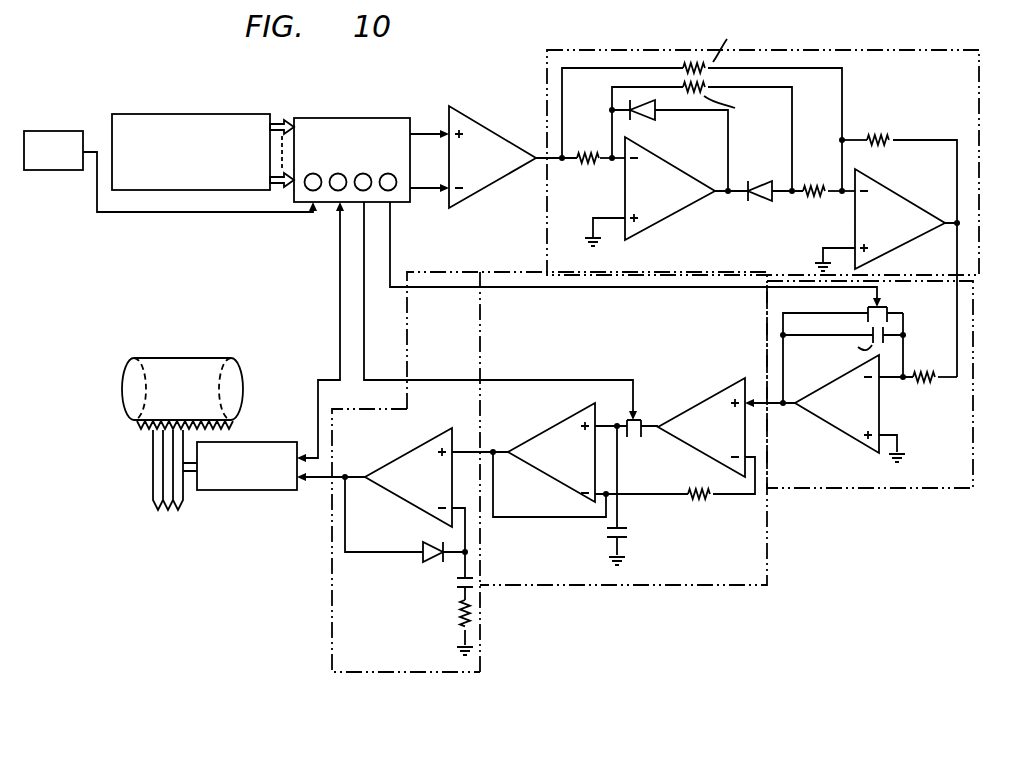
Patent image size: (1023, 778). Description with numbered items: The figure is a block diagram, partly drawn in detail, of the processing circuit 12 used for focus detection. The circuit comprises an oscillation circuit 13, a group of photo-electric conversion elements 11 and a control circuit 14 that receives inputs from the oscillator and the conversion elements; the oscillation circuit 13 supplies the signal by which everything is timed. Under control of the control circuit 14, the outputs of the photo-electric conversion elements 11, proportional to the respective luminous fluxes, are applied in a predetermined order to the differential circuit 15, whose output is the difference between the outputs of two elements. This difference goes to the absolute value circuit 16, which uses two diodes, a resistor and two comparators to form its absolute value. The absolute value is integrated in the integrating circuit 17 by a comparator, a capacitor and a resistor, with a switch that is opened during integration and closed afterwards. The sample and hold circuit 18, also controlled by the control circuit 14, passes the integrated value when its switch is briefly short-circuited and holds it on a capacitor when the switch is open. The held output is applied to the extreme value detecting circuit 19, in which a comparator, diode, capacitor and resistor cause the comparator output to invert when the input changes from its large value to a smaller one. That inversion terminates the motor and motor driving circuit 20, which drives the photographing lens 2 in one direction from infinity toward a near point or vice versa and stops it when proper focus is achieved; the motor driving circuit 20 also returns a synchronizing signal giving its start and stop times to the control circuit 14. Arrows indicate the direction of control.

The photographing lens 2 is at (157, 362).
The group of photo-electric conversion elements 11 is at (243, 126).
The processing circuit 12 is at (116, 81).
The oscillation circuit 13 is at (73, 131).
The control circuit 14 is at (386, 128).
The differential circuit 15 is at (481, 135).
The absolute value circuit 16 is at (966, 103).
The integrating circuit 17 is at (965, 428).
The sample and hold circuit 18 is at (727, 578).
The extreme value detecting circuit 19 is at (350, 640).
The motor and motor driving circuit 20 is at (281, 490).